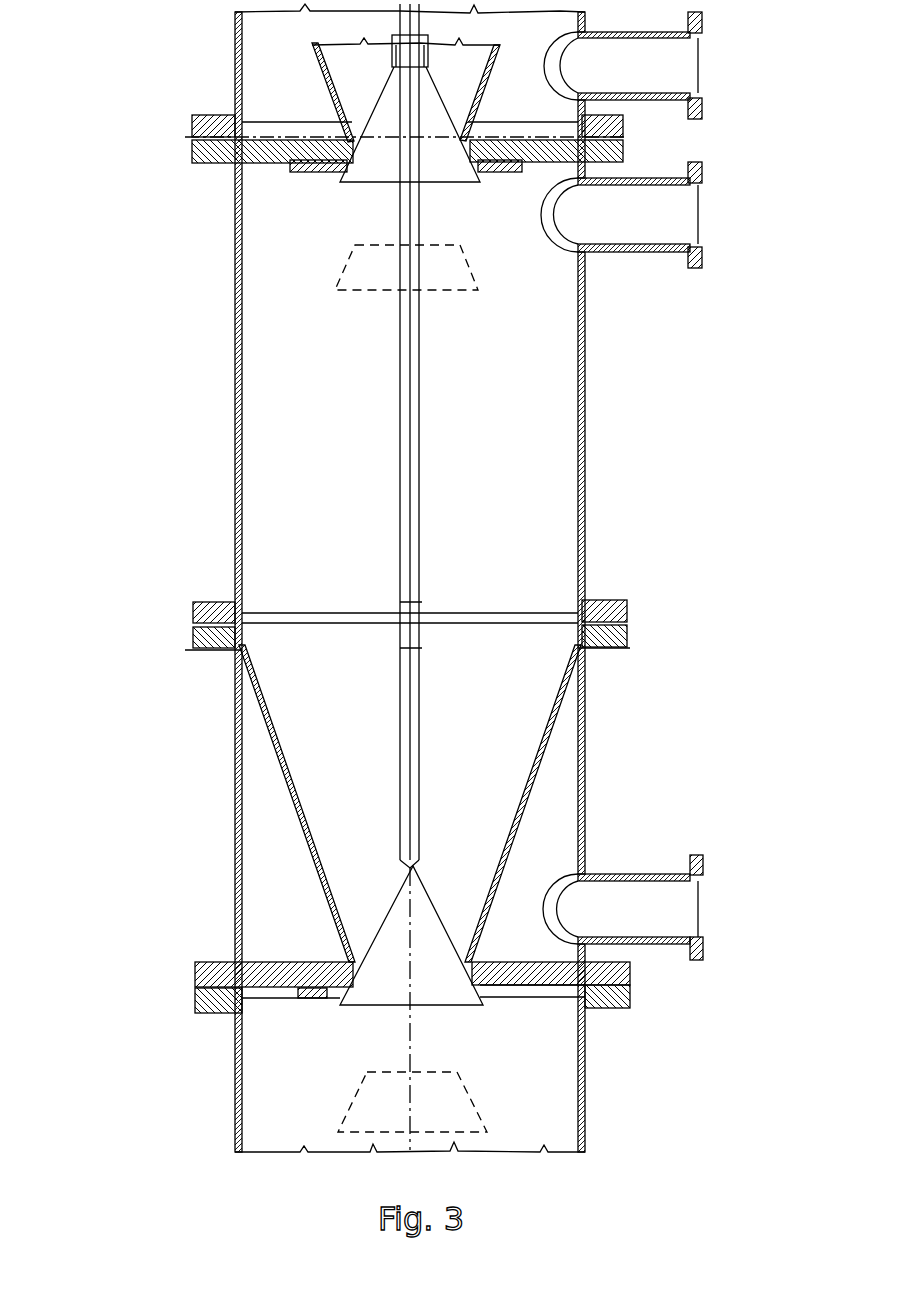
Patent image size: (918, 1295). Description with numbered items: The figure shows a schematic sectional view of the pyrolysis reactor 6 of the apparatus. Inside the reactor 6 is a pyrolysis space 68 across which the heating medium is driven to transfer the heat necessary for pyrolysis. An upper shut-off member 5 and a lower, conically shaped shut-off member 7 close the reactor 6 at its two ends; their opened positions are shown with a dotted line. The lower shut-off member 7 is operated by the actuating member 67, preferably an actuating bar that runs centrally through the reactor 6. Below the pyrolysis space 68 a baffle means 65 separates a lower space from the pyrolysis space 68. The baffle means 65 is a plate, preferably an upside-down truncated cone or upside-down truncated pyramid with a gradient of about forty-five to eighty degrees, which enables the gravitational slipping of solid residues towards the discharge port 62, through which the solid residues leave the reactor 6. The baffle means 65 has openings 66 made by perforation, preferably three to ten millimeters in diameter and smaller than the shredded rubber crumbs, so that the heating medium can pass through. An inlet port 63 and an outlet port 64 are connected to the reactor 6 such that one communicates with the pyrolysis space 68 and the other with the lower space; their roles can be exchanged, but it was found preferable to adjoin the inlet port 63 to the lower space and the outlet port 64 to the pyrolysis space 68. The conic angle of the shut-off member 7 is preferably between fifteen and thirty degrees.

The shut-off member 5 is at (353, 187).
The pyrolysis reactor 6 is at (202, 486).
The shut-off member 7 is at (360, 1003).
The discharge port 62 is at (364, 898).
The inlet port 63 is at (643, 875).
The outlet port 64 is at (646, 253).
The baffle means 65 is at (535, 777).
The openings 66 is at (565, 682).
The actuating member 67 is at (419, 505).
The pyrolysis space 68 is at (340, 404).